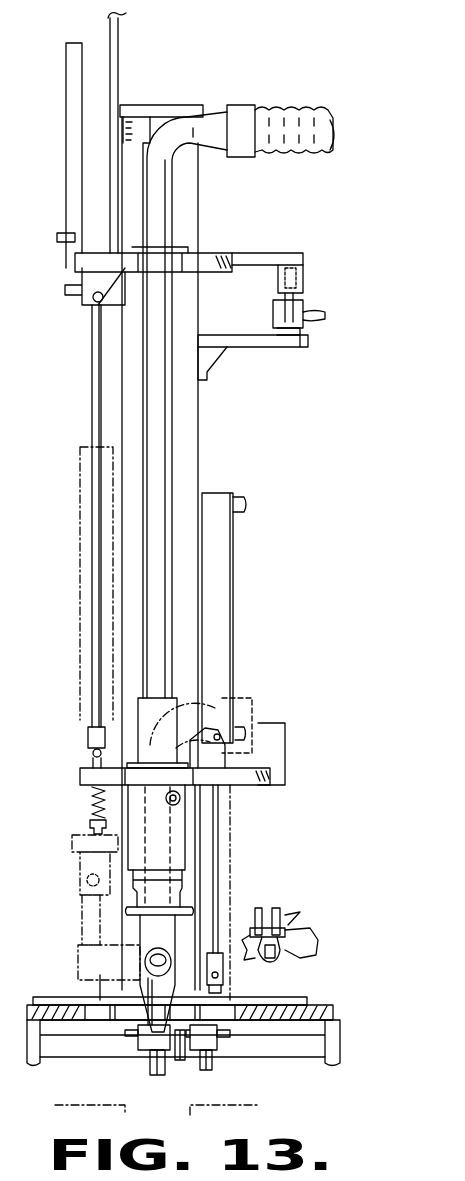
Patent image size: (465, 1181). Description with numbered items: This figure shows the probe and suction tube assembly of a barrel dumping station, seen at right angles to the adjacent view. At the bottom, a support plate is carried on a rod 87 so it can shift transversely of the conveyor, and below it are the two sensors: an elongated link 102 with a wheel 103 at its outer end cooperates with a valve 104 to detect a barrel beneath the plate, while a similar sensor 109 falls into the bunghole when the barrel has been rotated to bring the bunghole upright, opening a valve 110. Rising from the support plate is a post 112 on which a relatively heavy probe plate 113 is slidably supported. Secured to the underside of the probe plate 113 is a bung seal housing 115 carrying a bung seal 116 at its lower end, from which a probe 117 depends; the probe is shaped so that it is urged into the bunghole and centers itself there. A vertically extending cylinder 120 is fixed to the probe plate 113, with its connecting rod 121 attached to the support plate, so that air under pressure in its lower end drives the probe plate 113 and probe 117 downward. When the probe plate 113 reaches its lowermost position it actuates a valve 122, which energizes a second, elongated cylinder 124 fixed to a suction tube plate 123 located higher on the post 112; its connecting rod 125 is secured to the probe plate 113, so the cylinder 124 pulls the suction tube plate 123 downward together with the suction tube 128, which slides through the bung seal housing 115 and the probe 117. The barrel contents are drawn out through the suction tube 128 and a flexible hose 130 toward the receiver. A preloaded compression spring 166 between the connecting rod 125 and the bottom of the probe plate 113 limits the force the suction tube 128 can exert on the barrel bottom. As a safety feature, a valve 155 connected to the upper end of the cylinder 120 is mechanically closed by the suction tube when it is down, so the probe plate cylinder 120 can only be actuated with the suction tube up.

The rod 87 is at (55, 1048).
The elongated link 102 is at (196, 1058).
The wheel 103 is at (210, 1070).
The valve 104 is at (212, 1035).
The sensor 109 is at (155, 1070).
The valve 110 is at (180, 1062).
The post 112 is at (138, 122).
The probe plate 113 is at (270, 785).
The bung seal housing 115 is at (135, 855).
The bung seal 116 is at (128, 910).
The probe 117 is at (150, 990).
The cylinder 120 is at (232, 577).
The connecting rod 121 is at (217, 848).
The valve 122 is at (290, 925).
The suction tube plate 123 is at (208, 262).
The cylinder 124 is at (92, 152).
The connecting rod 125 is at (93, 362).
The suction tube 128 is at (160, 440).
The flexible hose 130 is at (308, 112).
The valve 155 is at (300, 306).
The compression spring 166 is at (92, 797).